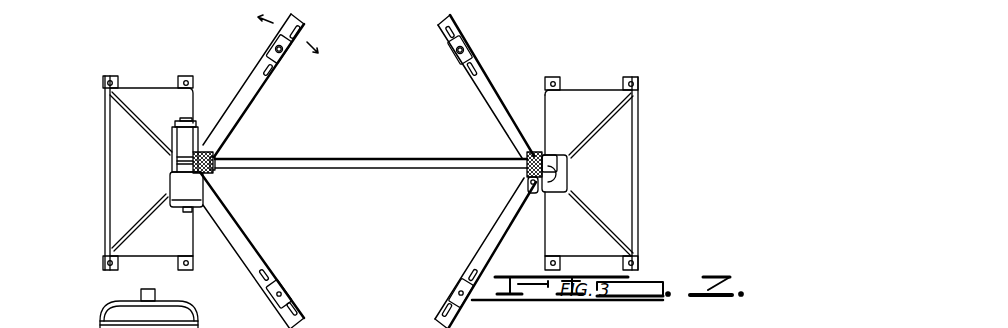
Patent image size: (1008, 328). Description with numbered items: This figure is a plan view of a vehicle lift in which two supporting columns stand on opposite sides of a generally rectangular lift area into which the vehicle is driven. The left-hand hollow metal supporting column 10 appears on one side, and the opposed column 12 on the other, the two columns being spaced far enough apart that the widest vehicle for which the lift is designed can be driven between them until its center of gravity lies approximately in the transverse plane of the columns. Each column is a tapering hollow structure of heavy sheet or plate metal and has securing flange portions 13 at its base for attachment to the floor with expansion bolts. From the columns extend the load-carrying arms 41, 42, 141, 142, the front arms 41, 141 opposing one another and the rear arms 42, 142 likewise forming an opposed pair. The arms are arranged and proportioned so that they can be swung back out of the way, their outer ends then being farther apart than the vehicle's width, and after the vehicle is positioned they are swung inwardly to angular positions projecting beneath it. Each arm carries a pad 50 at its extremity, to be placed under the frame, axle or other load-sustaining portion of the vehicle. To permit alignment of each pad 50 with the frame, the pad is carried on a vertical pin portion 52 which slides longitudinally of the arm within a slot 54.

The hollow metal supporting column 10 is at (112, 172).
The second box 12 is at (618, 181).
The securing flange portions 13 is at (104, 262).
The load-carrying arm 41 is at (253, 80).
The load-carrying arm 42 is at (253, 259).
The pad 50 is at (288, 63).
The vertical pin portion 52 is at (269, 42).
The slot 54 is at (272, 72).
The load-carrying arm 141 is at (493, 88).
The load-carrying arm 142 is at (497, 236).